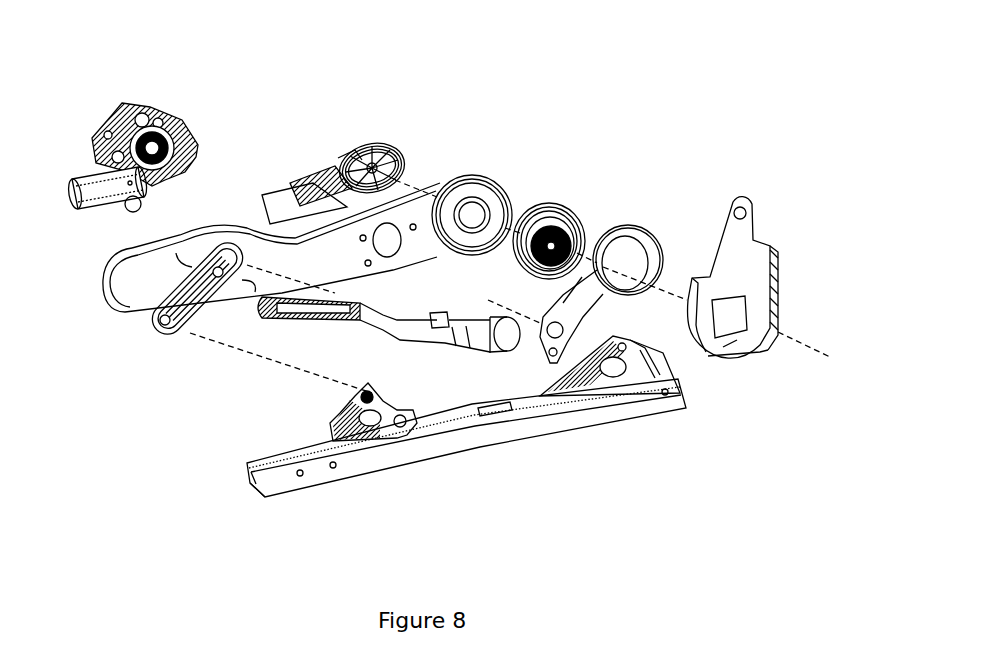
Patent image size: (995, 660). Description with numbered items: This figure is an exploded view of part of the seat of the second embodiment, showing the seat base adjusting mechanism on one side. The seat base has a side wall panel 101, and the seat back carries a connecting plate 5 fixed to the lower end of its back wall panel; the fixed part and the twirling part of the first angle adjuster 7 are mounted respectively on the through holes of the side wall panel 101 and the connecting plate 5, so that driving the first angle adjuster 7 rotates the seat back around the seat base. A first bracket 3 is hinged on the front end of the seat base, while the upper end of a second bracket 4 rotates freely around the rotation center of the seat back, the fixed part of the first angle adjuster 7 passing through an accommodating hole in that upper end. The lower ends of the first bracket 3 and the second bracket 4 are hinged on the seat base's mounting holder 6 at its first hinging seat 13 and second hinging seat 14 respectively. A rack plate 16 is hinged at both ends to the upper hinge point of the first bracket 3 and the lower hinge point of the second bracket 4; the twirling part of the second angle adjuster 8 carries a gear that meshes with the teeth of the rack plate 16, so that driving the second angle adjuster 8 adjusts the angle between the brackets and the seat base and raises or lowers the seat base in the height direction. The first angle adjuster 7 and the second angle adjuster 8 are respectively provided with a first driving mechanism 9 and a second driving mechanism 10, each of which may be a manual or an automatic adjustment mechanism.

The first bracket 3 is at (193, 313).
The second bracket 4 is at (635, 243).
The connecting plate 5 is at (723, 253).
The seat base's mounting holder 6 is at (288, 478).
The first angle adjuster 7 is at (568, 222).
The second angle adjuster 8 is at (184, 140).
The first driving mechanism 9 is at (322, 185).
The second driving mechanism 10 is at (102, 173).
The first hinging seat 13 is at (380, 400).
The second hinging seat 14 is at (600, 380).
The rack plate 16 is at (383, 324).
The side wall panel 101 is at (436, 196).